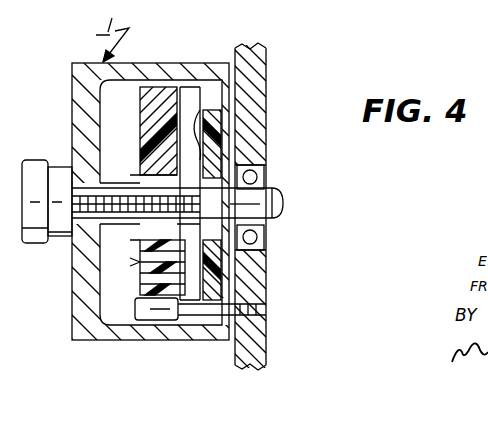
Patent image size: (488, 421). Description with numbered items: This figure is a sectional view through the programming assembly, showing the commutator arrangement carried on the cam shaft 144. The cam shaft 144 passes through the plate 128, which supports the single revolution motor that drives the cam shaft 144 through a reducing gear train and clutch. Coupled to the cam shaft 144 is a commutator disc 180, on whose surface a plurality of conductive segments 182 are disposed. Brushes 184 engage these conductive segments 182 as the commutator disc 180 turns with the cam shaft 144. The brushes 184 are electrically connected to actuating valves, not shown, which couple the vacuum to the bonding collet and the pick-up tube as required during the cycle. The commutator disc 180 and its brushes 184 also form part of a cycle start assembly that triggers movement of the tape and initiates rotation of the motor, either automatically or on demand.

The plate 128 is at (257, 319).
The cam shaft 144 is at (285, 205).
The commutator disc 180 is at (222, 112).
The conductive segments 182 is at (197, 126).
The brushes 184 is at (137, 263).